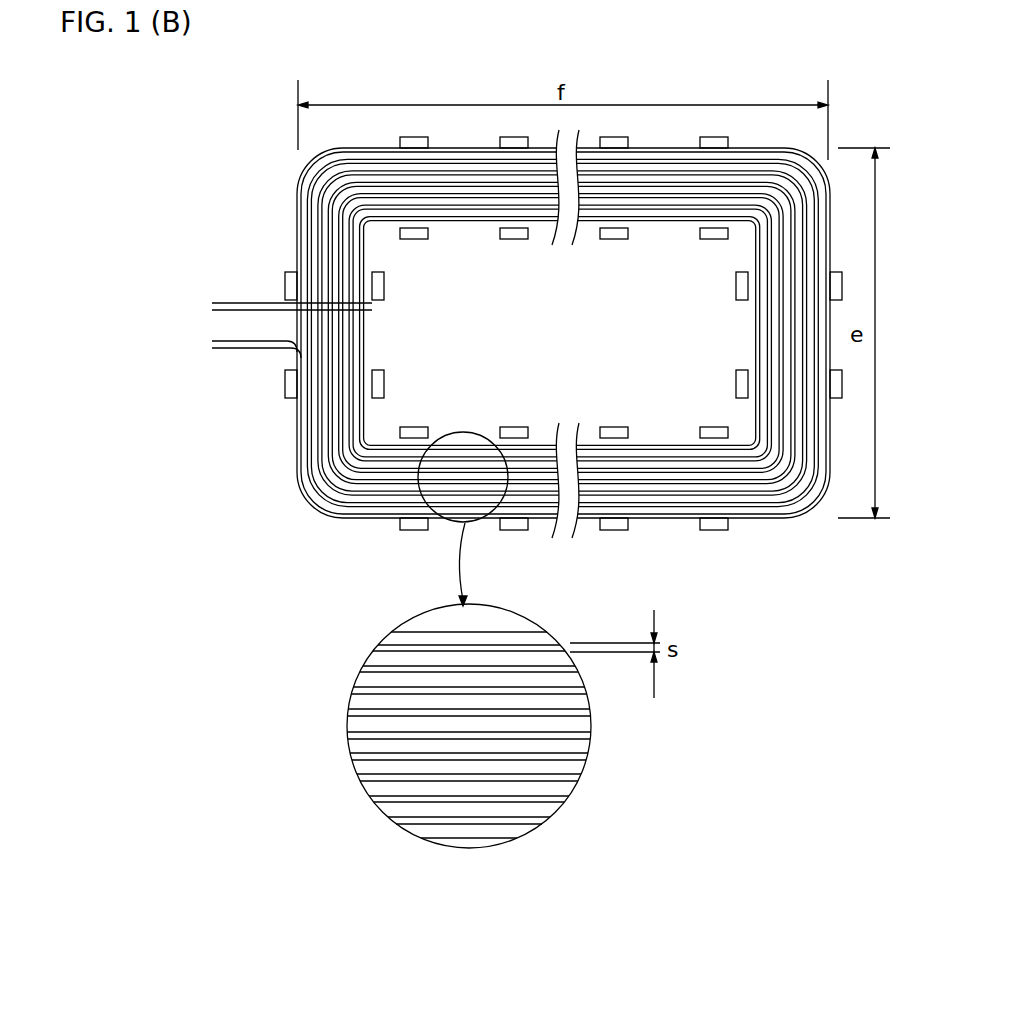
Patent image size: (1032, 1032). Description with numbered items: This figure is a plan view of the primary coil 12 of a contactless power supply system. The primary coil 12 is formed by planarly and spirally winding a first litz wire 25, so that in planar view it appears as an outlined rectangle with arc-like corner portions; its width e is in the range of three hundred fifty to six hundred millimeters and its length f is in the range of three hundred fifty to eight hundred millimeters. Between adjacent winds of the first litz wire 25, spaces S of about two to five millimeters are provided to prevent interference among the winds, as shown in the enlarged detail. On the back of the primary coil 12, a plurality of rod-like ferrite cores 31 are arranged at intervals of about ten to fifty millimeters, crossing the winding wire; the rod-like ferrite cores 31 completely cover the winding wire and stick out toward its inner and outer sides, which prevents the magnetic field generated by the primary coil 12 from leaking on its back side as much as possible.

The primary coil 12 is at (527, 482).
The first litz wire 25 is at (665, 508).
The rod-like ferrite core 31 is at (722, 145).